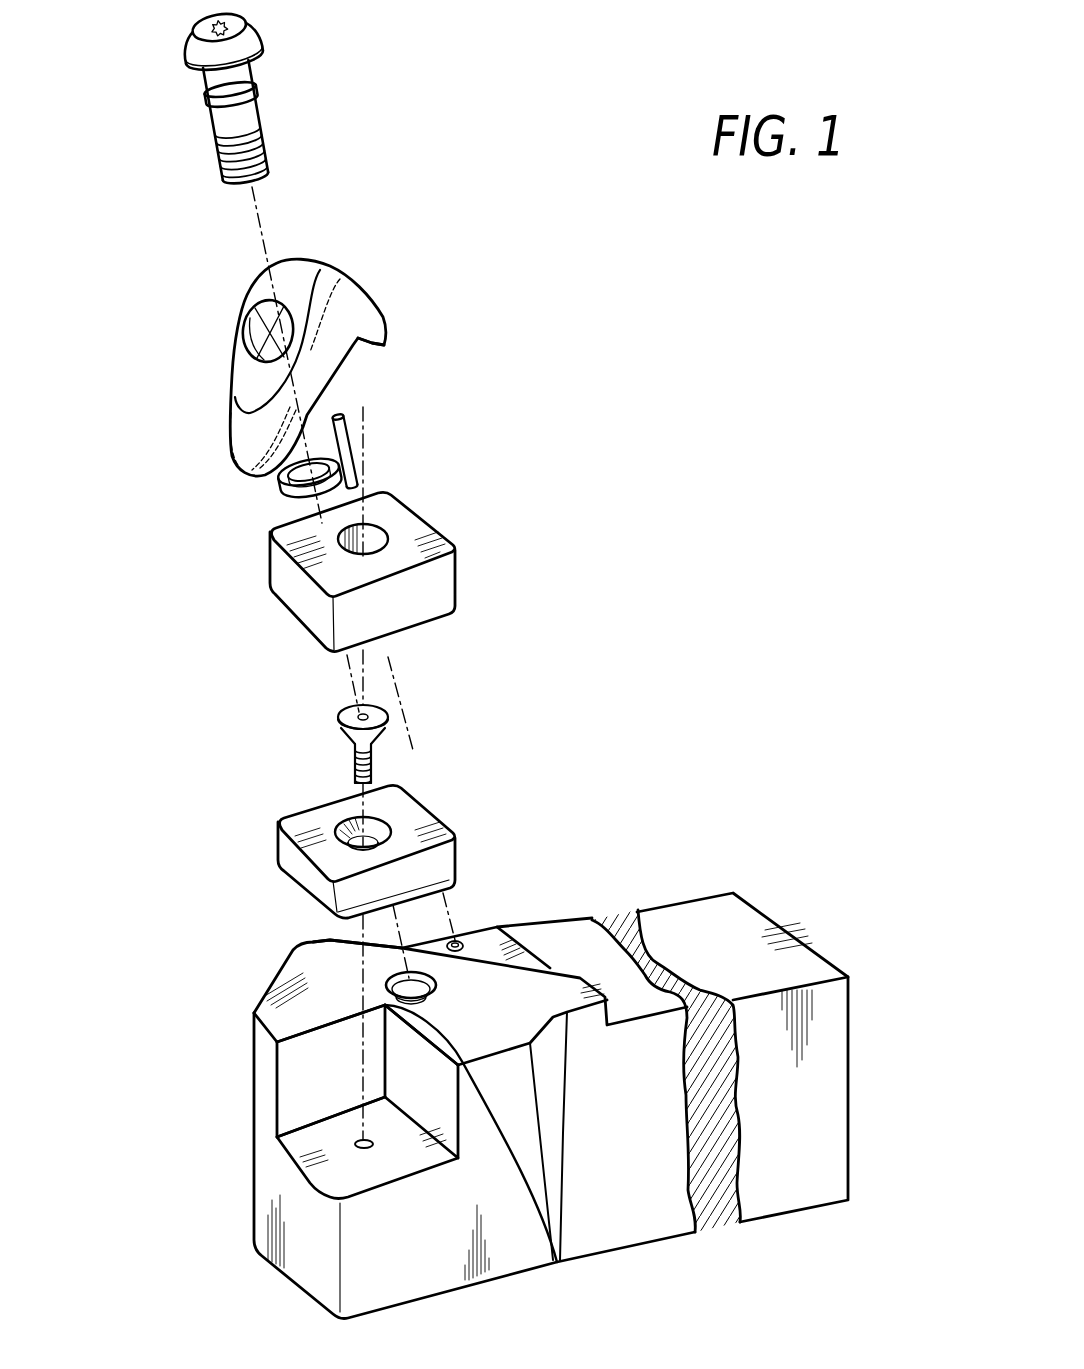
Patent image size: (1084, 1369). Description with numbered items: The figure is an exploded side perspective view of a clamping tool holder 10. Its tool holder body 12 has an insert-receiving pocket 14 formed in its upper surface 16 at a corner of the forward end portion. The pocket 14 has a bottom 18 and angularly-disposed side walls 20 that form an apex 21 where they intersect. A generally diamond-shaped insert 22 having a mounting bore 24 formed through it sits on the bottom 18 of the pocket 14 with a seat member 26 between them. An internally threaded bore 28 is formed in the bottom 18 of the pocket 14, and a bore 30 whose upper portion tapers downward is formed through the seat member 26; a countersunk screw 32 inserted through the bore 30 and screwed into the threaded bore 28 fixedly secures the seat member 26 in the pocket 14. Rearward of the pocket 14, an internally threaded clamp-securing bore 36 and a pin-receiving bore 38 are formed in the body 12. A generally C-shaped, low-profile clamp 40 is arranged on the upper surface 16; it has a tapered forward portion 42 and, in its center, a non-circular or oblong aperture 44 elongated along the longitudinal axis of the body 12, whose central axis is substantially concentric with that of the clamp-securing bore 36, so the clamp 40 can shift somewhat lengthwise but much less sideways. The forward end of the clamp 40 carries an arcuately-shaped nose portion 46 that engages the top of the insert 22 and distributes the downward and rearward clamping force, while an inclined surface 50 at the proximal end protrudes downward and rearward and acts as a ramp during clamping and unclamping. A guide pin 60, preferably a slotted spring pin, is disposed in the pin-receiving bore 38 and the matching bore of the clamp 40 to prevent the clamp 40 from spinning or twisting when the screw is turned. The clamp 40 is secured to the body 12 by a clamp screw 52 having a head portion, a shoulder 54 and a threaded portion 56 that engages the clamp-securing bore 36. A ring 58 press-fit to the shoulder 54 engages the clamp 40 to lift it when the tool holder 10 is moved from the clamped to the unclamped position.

The clamping tool holder 10 is at (705, 713).
The tool holder body 12 is at (715, 905).
The insert-receiving pocket 14 is at (401, 1078).
The upper surface 16 is at (300, 963).
The bottom 18 is at (327, 1177).
The side walls 20 is at (293, 1076).
The apex 21 is at (558, 1262).
The insert 22 is at (415, 547).
The mounting bore 24 is at (378, 540).
The seat member 26 is at (337, 835).
The internally threaded bore 28 is at (374, 1148).
The bore 30 is at (378, 828).
The countersunk screw 32 is at (377, 760).
The clamp-securing bore 36 is at (435, 978).
The pin-receiving bore 38 is at (457, 943).
The clamp 40 is at (312, 329).
The tapered forward portion 42 is at (240, 362).
The non-circular aperture 44 is at (277, 300).
The nose portion 46 is at (232, 468).
The inclined surface 50 is at (370, 349).
The clamp screw 52 is at (289, 94).
The shoulder 54 is at (260, 88).
The threaded portion 56 is at (272, 163).
The ring 58 is at (277, 492).
The guide pin 60 is at (353, 457).